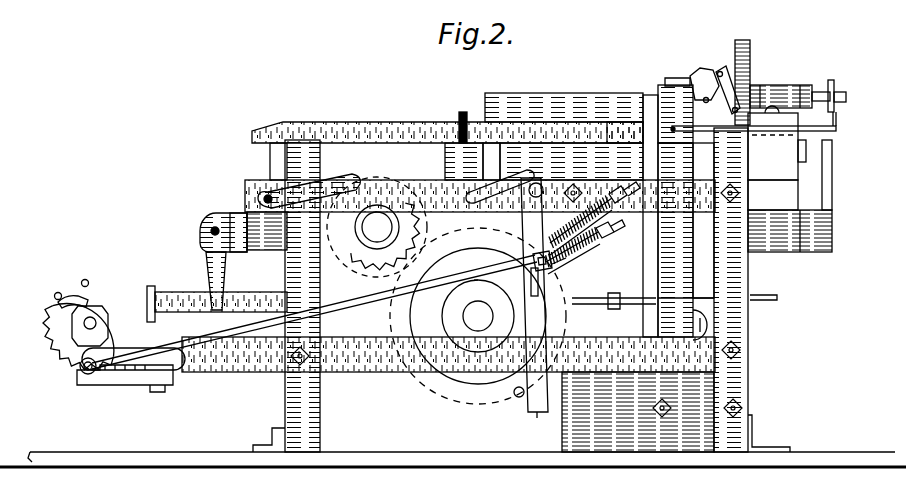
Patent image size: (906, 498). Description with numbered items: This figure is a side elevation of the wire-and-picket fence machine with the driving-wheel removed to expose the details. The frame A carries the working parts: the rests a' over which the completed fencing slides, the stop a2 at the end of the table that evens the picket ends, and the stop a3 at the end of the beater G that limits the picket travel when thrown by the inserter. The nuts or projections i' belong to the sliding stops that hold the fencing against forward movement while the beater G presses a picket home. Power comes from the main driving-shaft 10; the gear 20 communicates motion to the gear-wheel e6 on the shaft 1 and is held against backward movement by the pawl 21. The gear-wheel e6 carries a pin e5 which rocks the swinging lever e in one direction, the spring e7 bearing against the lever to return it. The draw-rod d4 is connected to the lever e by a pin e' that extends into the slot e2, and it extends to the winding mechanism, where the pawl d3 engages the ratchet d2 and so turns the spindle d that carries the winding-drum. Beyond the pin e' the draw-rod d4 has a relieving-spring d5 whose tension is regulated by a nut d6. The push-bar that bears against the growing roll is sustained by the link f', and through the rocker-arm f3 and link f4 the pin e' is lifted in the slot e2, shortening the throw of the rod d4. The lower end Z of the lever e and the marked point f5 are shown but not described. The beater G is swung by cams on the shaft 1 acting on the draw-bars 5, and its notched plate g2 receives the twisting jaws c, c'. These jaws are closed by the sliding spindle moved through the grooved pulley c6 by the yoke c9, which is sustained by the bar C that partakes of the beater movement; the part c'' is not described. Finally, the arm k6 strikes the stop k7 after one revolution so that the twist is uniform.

The frame A is at (486, 273).
The rests a' is at (447, 122).
The stop a2 is at (564, 124).
The stop a3 is at (675, 114).
The beater G is at (675, 154).
The nuts or projections i' is at (461, 117).
The gear 20 is at (377, 227).
The shaft 10 is at (377, 227).
The pawl 21 is at (352, 183).
The gear-wheel e6 is at (478, 316).
The shaft 1 is at (478, 316).
The pin e5 is at (565, 172).
The swinging lever e is at (534, 295).
The slot e2 is at (533, 290).
The lever end Z is at (536, 422).
The link f' is at (537, 248).
The link f4 is at (308, 310).
The rod pin f5 is at (472, 282).
The rocker-arm f3 is at (500, 188).
The spring e7 is at (594, 218).
The relieving-spring d5 is at (573, 250).
The nut d6 is at (621, 232).
The pin e' is at (564, 259).
The draw-bars 5 is at (588, 298).
The draw-rod d4 is at (217, 269).
The ratchet d2 is at (52, 338).
The spindle d is at (92, 320).
The pawl d3 is at (55, 297).
The bar C is at (742, 69).
The jaw c' is at (763, 111).
The yoke or fork c9 is at (832, 86).
The grooved pulley c6 is at (846, 94).
The bearing housing c'' is at (784, 143).
The jaw c is at (715, 84).
The notched plate g2 is at (686, 82).
The arm k6 is at (798, 196).
The stop k7 is at (783, 175).